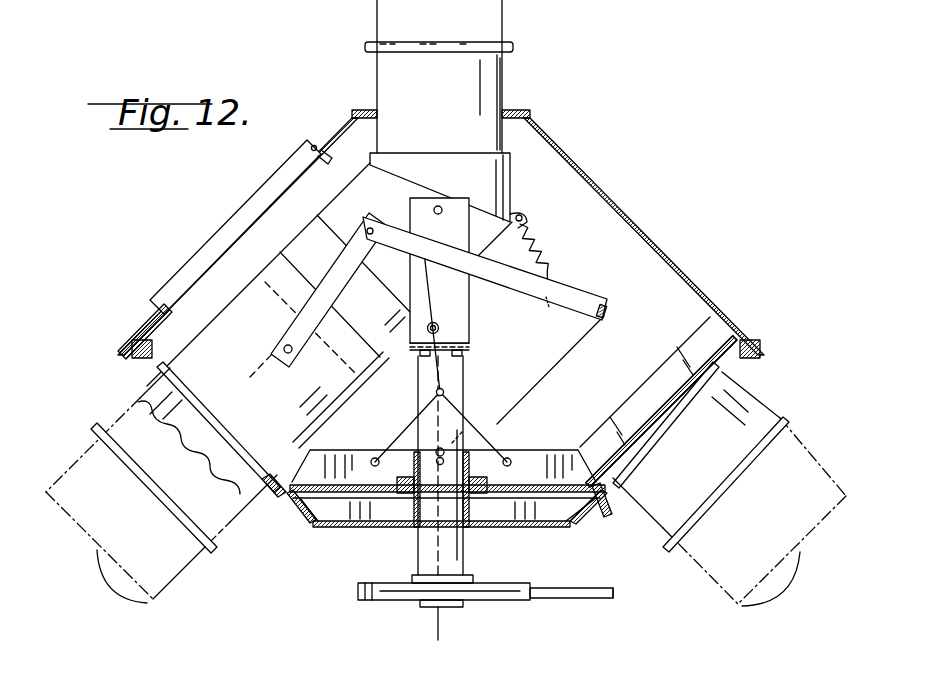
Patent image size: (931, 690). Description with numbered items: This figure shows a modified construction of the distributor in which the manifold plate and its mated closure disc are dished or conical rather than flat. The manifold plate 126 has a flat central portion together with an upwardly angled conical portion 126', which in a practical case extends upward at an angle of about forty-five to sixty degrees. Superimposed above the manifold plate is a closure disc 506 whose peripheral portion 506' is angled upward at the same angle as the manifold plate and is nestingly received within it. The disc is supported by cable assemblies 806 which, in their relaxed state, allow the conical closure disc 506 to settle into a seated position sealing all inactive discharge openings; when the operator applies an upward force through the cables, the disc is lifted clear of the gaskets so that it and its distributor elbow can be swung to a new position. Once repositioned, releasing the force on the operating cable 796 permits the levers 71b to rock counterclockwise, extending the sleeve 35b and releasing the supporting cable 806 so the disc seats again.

The sleeve 35b is at (230, 303).
The peripheral portion of closure disc 506' is at (417, 379).
The levers 71b is at (581, 291).
The cable assemblies 806 is at (452, 388).
The operating cable 796 is at (520, 402).
The closure disc 506 is at (447, 470).
The manifold plate 126 is at (447, 533).
The conical portion of manifold plate 126' is at (269, 520).